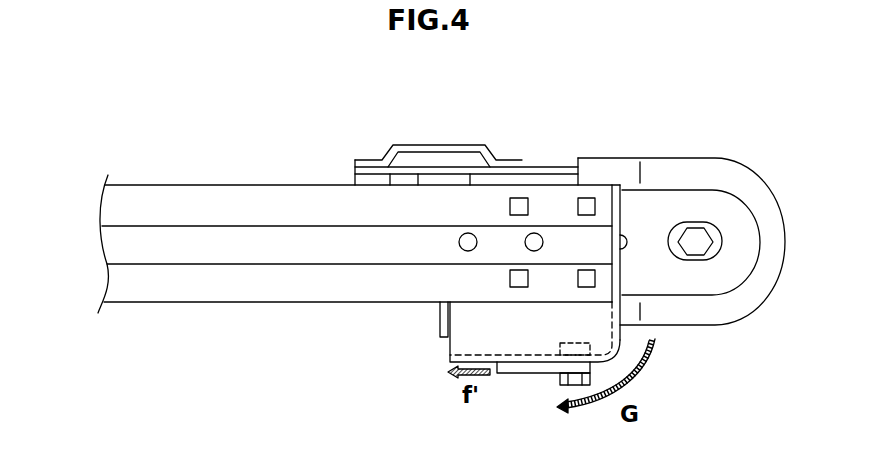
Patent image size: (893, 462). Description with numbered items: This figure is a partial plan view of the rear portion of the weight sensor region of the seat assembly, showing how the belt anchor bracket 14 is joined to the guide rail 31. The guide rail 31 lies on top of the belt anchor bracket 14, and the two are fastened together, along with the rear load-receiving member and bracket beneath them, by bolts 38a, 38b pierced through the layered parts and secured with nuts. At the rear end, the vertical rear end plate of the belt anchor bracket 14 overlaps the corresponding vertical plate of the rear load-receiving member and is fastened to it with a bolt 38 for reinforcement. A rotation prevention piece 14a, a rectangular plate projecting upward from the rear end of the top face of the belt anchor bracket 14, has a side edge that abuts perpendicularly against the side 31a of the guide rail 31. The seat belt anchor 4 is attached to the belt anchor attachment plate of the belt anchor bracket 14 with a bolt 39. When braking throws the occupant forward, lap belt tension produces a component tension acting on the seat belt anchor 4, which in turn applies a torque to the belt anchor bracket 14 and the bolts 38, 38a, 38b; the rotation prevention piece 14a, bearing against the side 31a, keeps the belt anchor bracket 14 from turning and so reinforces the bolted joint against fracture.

The guide rail 31 is at (117, 210).
The side of the guide rail 31a is at (303, 302).
The bolt 38 is at (624, 238).
The bolt 38a is at (534, 233).
The bolt 38b is at (468, 233).
The belt anchor bracket 14 is at (460, 345).
The rotation prevention piece 14a is at (440, 322).
The seat belt anchor 4 is at (506, 363).
The bolt 39 is at (572, 385).